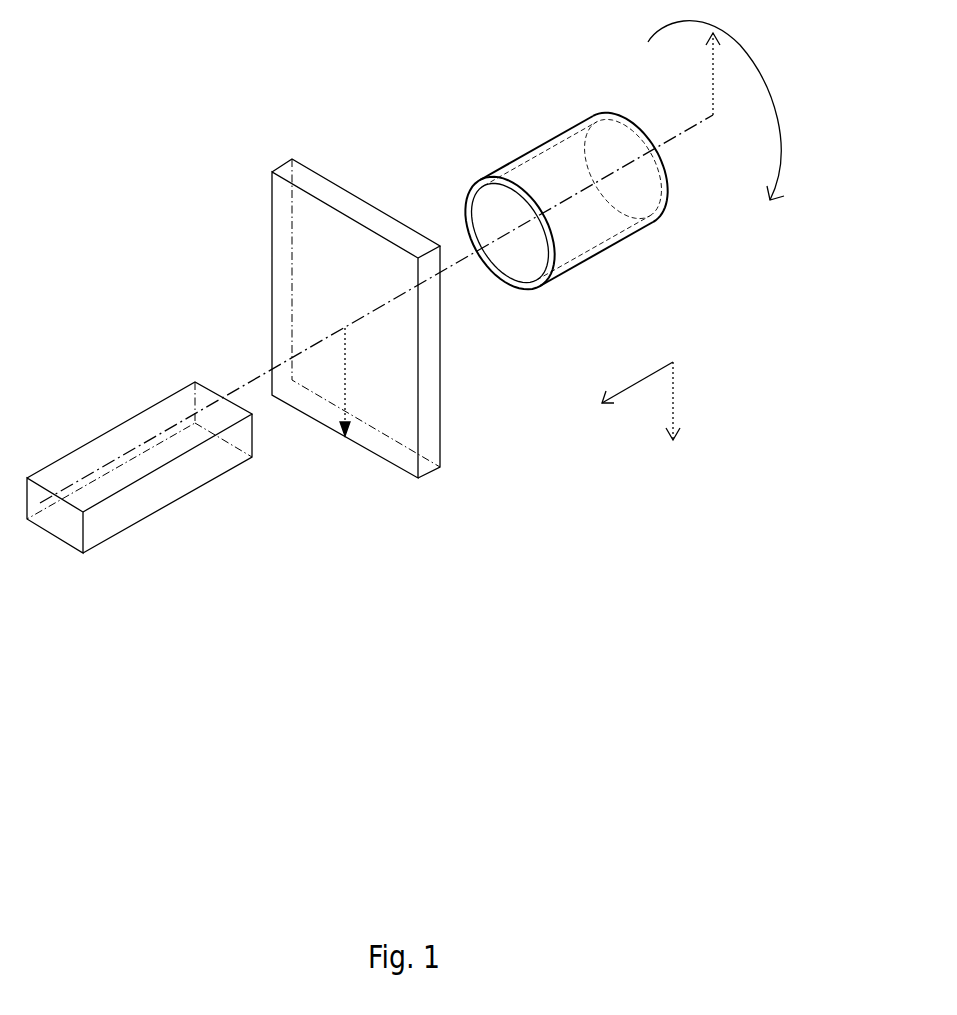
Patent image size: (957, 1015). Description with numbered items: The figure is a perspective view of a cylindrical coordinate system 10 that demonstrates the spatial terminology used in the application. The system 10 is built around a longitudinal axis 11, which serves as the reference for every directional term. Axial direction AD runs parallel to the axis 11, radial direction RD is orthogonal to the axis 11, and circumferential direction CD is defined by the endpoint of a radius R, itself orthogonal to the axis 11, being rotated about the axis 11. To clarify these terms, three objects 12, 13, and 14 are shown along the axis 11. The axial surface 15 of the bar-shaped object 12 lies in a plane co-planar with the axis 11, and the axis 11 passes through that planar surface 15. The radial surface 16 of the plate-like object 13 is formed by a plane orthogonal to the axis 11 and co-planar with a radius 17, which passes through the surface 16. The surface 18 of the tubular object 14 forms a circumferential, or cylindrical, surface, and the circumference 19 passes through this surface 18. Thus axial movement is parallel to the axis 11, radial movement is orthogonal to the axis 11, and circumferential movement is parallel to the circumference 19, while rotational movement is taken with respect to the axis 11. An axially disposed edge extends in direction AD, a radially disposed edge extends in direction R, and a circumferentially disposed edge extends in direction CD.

The cylindrical coordinate system 10 is at (228, 205).
The longitudinal axis 11 is at (653, 147).
The object 12 is at (110, 542).
The object 13 is at (448, 468).
The object 14 is at (587, 263).
The axial surface 15 is at (103, 450).
The radial surface 16 is at (283, 280).
The radius 17 is at (345, 373).
The circumferential surface 18 is at (537, 143).
The circumference 19 is at (465, 200).
The radius R is at (713, 70).
The circumferential direction CD is at (747, 60).
The axial direction AD is at (637, 380).
The radial direction RD is at (673, 397).